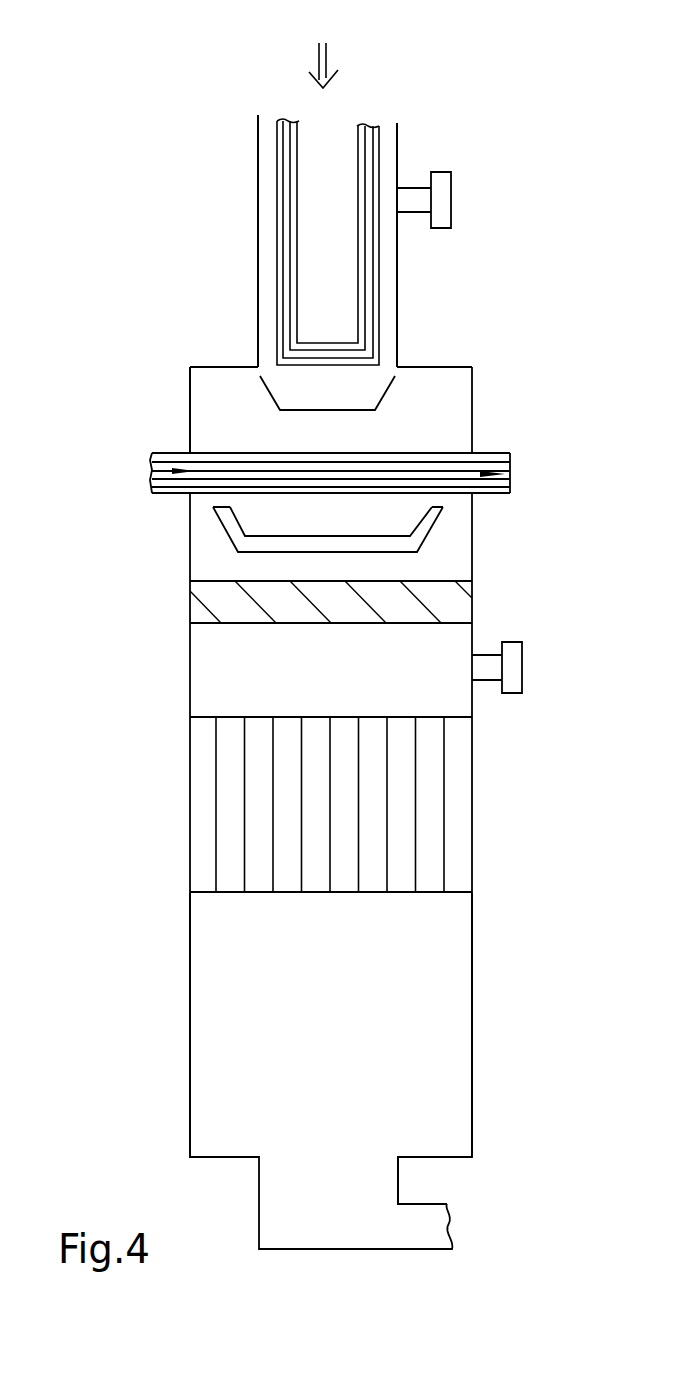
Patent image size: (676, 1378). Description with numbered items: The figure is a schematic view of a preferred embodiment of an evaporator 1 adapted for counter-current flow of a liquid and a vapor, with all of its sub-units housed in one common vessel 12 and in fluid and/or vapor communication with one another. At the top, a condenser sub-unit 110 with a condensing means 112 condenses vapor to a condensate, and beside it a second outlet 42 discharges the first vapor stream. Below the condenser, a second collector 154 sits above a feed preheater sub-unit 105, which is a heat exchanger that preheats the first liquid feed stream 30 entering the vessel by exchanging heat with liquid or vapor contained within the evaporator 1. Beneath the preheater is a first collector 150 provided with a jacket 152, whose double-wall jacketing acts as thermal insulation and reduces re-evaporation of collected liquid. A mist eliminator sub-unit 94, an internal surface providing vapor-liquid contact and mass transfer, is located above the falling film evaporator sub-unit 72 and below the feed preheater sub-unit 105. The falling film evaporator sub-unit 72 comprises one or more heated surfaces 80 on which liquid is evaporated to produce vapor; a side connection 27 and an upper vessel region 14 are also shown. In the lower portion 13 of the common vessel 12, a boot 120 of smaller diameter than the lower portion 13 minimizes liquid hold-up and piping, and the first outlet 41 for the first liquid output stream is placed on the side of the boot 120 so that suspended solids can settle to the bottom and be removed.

The evaporator 1 is at (323, 47).
The common vessel 12 is at (472, 977).
The lower portion 13 is at (188, 1075).
The housing upper section 14 is at (190, 440).
The outlet connection 27 is at (522, 672).
The first liquid feed stream 30 is at (158, 490).
The first outlet 41 is at (412, 1225).
The second outlet 42 is at (451, 200).
The falling film evaporator sub-unit 72 is at (458, 812).
The heated surfaces 80 is at (245, 812).
The mist eliminator sub-unit 94 is at (420, 579).
The feed preheater sub-unit 105 is at (253, 458).
The condenser sub-unit 110 is at (258, 220).
The condensing means 112 is at (373, 298).
The boot 120 is at (398, 1175).
The first collector 150 is at (443, 507).
The jacket 152 is at (227, 535).
The second collector 154 is at (383, 398).